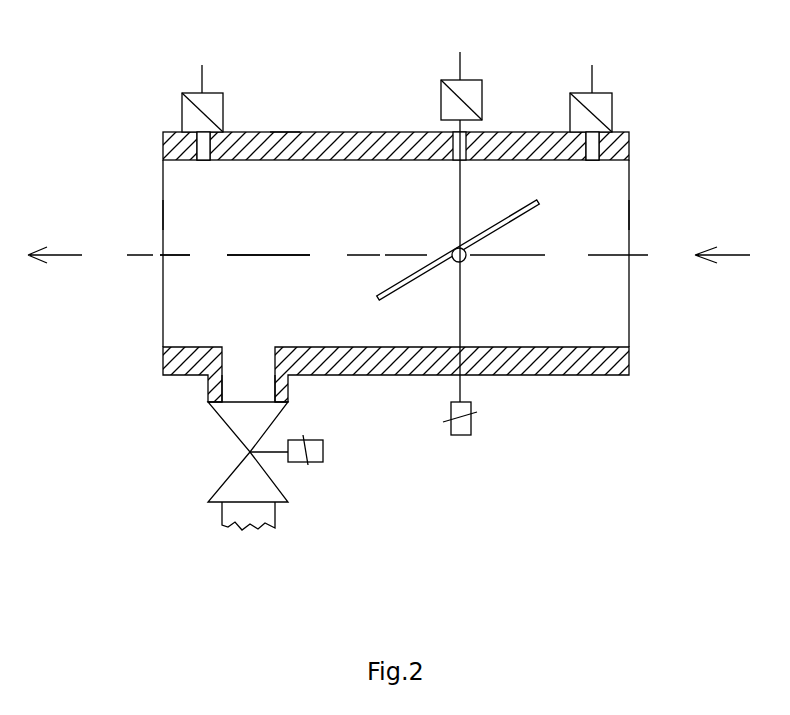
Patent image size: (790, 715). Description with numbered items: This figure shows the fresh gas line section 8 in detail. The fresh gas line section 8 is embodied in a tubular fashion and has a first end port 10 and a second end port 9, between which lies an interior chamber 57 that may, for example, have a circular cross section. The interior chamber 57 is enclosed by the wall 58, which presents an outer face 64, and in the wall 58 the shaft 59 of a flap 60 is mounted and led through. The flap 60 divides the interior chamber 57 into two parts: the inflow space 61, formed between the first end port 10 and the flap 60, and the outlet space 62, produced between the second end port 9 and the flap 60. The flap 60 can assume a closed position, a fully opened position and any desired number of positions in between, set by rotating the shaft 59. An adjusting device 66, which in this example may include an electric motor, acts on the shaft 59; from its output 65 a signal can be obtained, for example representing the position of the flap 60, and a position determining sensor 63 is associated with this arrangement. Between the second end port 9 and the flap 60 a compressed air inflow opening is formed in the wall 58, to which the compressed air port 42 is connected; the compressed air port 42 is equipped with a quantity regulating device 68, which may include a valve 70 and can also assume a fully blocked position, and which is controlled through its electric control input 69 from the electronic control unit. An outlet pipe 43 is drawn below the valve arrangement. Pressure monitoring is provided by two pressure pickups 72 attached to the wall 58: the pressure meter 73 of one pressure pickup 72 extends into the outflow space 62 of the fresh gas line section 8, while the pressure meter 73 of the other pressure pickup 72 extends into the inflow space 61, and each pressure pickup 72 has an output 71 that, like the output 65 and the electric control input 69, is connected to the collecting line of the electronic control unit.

The fresh gas line section 8 is at (332, 208).
The second end port 9 is at (150, 206).
The first end port 10 is at (638, 210).
The compressed air port 42 is at (245, 402).
The outlet pipe 43 is at (257, 510).
The interior chamber 57 is at (244, 208).
The wall 58 is at (291, 142).
The shaft 59 is at (455, 249).
The flap 60 is at (415, 267).
The inflow space 61 is at (575, 310).
The outlet space 62 is at (182, 300).
The position determining sensor 63 is at (482, 97).
The outer face 64 is at (522, 138).
The output 65 is at (460, 62).
The adjusting device 66 is at (462, 437).
The quantity regulating device 68 is at (277, 420).
The electric control input 69 is at (252, 338).
The valve 70 is at (275, 453).
The output 71 is at (202, 78).
The pressure pickup 72 is at (180, 112).
The pressure meter 73 is at (207, 148).